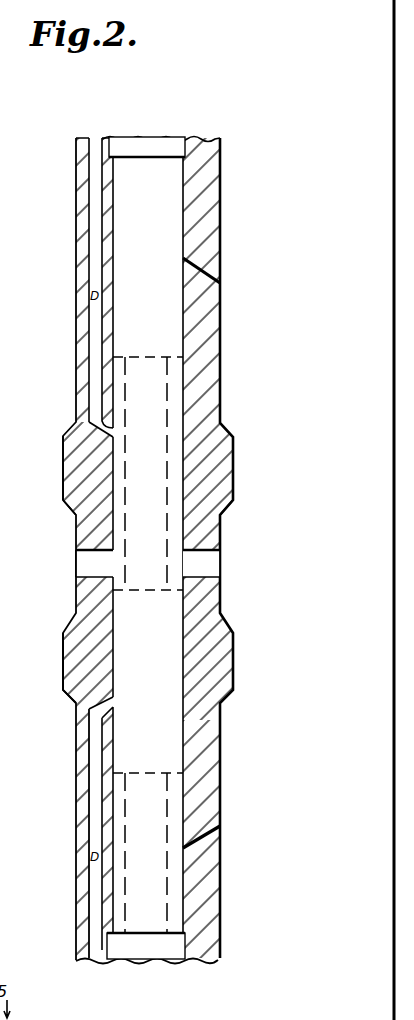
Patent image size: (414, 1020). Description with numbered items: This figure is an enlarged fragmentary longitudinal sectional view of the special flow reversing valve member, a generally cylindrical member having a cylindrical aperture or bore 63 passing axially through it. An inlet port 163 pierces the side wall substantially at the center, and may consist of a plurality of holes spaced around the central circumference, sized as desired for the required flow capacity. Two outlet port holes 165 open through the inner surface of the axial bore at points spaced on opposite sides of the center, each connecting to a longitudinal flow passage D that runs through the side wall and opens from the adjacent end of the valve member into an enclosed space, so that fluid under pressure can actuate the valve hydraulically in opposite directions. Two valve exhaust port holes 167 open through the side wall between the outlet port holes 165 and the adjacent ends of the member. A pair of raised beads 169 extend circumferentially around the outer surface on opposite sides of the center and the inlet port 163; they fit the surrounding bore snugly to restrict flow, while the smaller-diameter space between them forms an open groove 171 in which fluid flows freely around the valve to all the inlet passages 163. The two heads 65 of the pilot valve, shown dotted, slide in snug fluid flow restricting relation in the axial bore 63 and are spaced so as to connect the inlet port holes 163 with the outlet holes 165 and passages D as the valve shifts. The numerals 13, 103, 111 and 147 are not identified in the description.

The housing 13 is at (80, 458).
The cylindrical aperture or bore 63 is at (125, 832).
The heads of the pilot valve 65 is at (140, 238).
The inner tube 103 is at (92, 282).
The lower collar body 111 is at (39, 668).
The lower inner tube 147 is at (92, 833).
The inlet port 163 is at (88, 568).
The outlet port holes 165 is at (90, 416).
The valve exhaust port holes 167 is at (208, 298).
The raised beads 169 is at (75, 483).
The open groove 171 is at (68, 513).